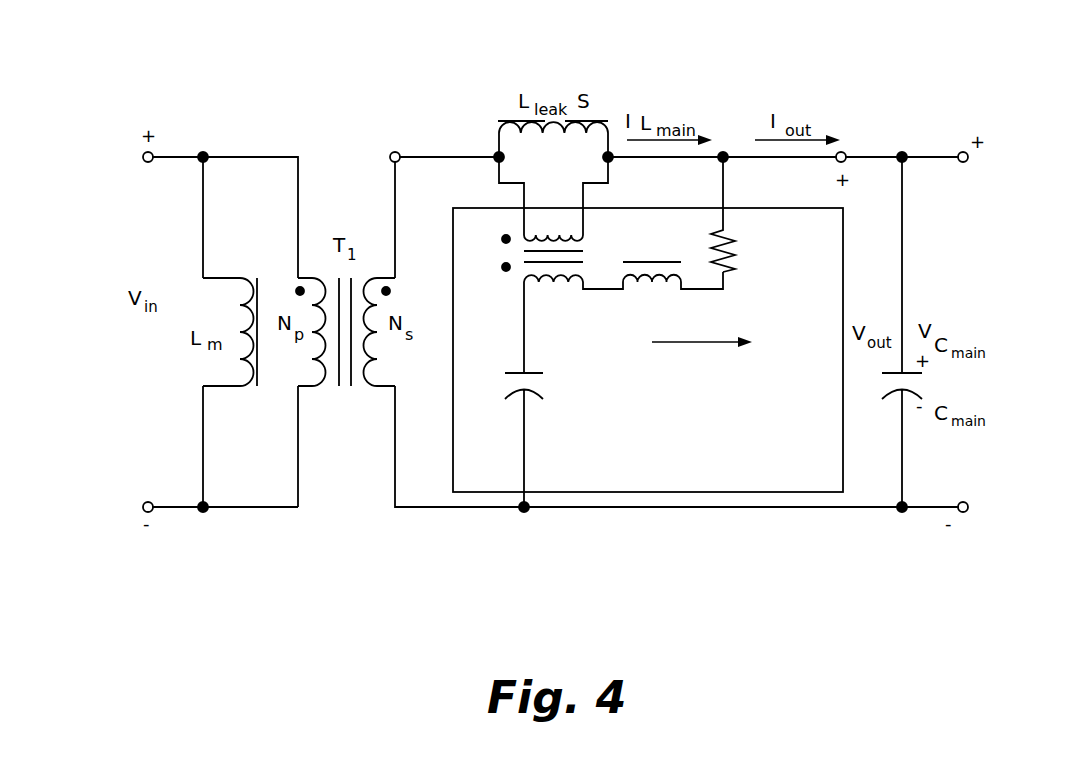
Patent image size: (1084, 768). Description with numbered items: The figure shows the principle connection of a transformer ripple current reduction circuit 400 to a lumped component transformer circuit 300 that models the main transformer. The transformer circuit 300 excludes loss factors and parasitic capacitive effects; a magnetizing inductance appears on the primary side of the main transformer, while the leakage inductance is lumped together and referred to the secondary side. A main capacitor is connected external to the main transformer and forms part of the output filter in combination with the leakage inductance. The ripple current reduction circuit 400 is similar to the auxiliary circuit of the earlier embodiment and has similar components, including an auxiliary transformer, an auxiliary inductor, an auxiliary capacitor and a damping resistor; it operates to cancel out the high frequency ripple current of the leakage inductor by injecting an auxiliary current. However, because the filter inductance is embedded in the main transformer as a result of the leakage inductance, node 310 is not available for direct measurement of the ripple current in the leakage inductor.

The lumped component transformer circuit 300 is at (305, 135).
The node 310 is at (394, 152).
The transformer ripple current reduction circuit 400 is at (783, 528).